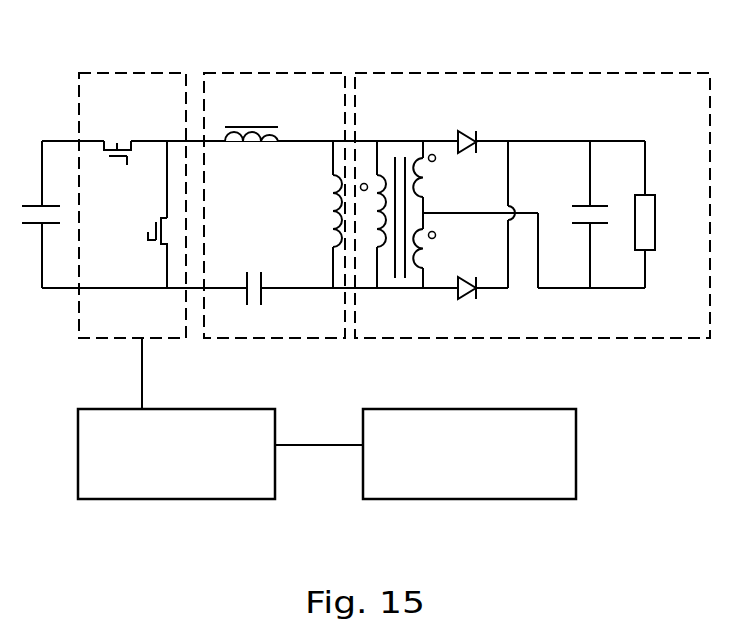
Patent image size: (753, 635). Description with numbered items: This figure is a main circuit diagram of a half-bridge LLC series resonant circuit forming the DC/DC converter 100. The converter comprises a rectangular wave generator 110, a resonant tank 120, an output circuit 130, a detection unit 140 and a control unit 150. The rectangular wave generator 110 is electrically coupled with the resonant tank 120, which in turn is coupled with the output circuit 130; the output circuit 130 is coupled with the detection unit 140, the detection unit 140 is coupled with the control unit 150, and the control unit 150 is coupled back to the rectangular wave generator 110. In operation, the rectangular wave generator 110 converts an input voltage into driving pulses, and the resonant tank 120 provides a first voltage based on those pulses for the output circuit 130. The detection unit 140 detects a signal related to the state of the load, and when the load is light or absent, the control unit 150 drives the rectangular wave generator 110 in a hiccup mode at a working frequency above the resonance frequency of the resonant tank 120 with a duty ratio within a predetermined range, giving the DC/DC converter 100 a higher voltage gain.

The DC/DC converter 100 is at (68, 39).
The rectangular wave generator 110 is at (150, 73).
The resonant tank 120 is at (292, 73).
The output circuit 130 is at (522, 73).
The detection unit 140 is at (491, 479).
The control unit 150 is at (198, 479).